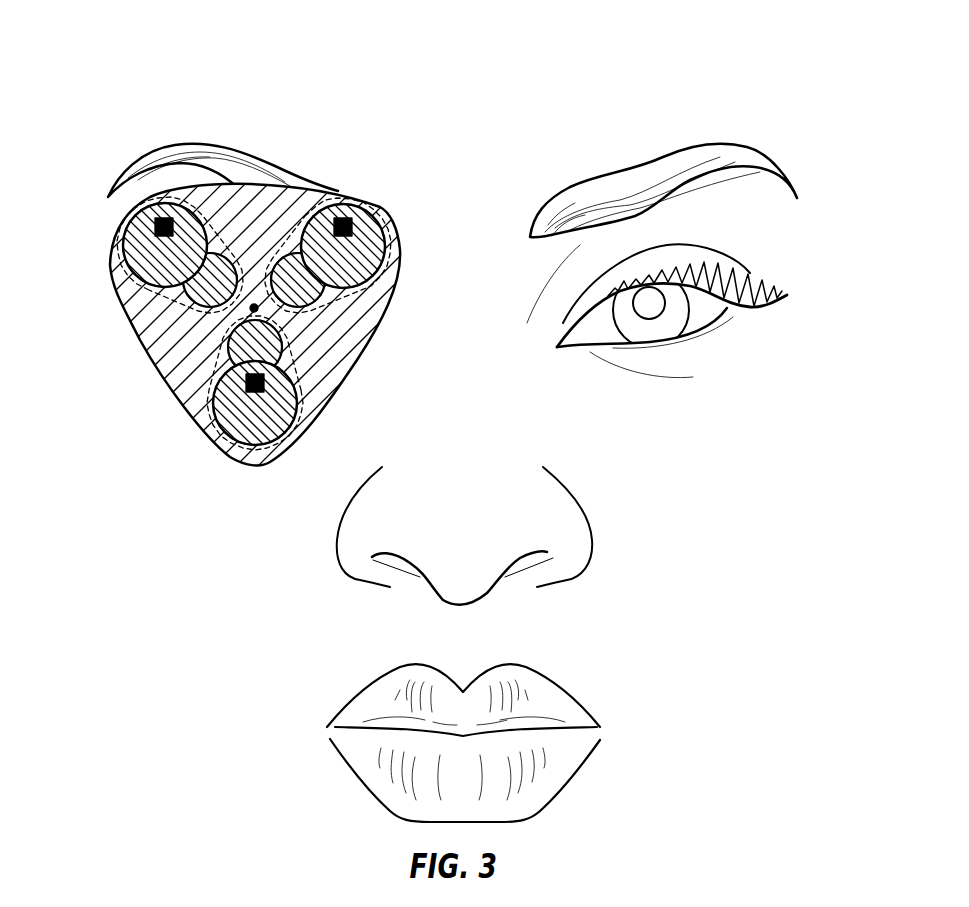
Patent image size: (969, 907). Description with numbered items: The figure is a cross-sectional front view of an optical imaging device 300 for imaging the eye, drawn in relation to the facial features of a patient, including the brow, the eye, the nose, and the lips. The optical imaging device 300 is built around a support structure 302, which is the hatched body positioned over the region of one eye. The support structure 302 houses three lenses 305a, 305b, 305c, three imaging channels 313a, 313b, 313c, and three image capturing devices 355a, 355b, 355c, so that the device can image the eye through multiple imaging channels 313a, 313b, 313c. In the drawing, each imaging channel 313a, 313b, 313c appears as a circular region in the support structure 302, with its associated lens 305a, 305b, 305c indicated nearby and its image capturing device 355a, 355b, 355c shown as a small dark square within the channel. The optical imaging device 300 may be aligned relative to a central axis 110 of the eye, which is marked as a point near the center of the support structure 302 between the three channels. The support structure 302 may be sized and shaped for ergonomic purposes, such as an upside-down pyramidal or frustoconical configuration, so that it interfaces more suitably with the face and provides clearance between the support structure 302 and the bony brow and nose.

The optical imaging device 300 is at (343, 270).
The support structure 302 is at (157, 361).
The central axis 110 is at (254, 308).
The lens 305a is at (144, 278).
The lens 305b is at (217, 418).
The lens 305c is at (380, 220).
The imaging channel 313a is at (127, 245).
The imaging channel 313b is at (262, 448).
The imaging channel 313c is at (312, 208).
The image capturing device 355a is at (156, 231).
The image capturing device 355b is at (253, 437).
The image capturing device 355c is at (345, 217).